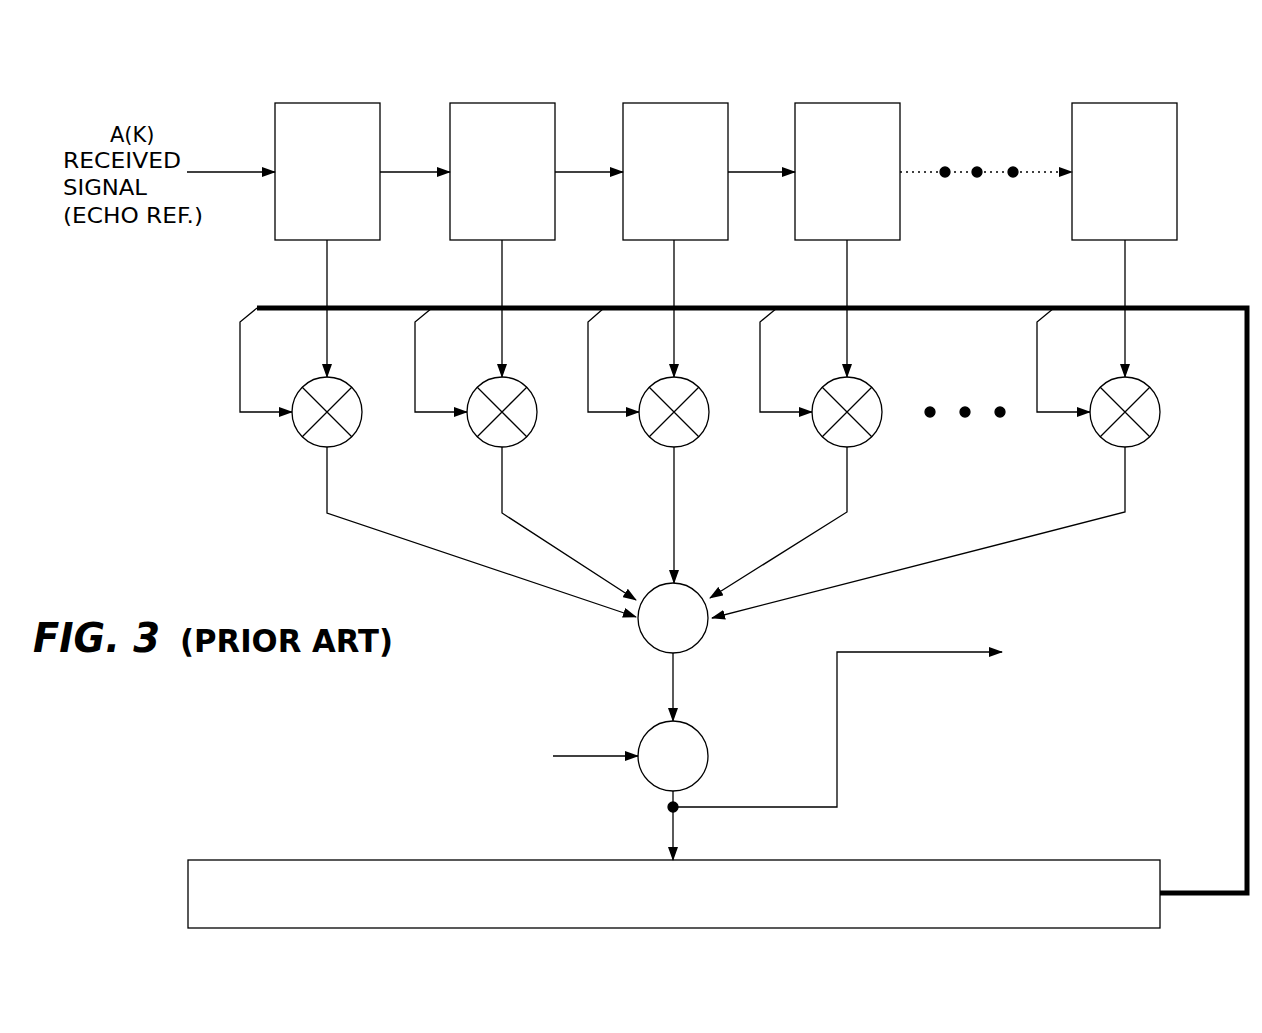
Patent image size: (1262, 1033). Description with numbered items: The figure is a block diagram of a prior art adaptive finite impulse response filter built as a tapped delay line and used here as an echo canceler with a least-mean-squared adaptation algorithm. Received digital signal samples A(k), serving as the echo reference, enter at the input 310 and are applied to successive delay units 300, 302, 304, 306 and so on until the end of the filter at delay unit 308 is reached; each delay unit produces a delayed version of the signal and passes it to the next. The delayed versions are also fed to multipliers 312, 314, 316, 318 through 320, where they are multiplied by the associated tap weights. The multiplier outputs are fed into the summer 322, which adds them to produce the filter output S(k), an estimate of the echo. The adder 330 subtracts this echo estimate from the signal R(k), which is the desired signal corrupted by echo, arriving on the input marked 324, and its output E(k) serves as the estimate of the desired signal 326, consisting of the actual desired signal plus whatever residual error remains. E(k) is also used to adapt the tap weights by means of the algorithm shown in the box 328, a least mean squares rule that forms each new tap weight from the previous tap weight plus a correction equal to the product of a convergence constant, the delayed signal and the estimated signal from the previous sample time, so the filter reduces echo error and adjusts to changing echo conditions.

The delay unit 300 is at (292, 118).
The delay unit 302 is at (467, 118).
The delay unit 304 is at (640, 118).
The delay unit 306 is at (812, 118).
The delay unit 308 is at (1088, 118).
The input 310 is at (237, 174).
The multiplier 312 is at (323, 432).
The multiplier 314 is at (497, 432).
The multiplier 316 is at (670, 432).
The multiplier 318 is at (843, 432).
The multiplier 320 is at (1122, 432).
The summer 322 is at (652, 637).
The desired signal plus echo input 324 is at (567, 752).
The desired signal 326 is at (845, 757).
The algorithm 328 is at (272, 893).
The adder 330 is at (660, 776).